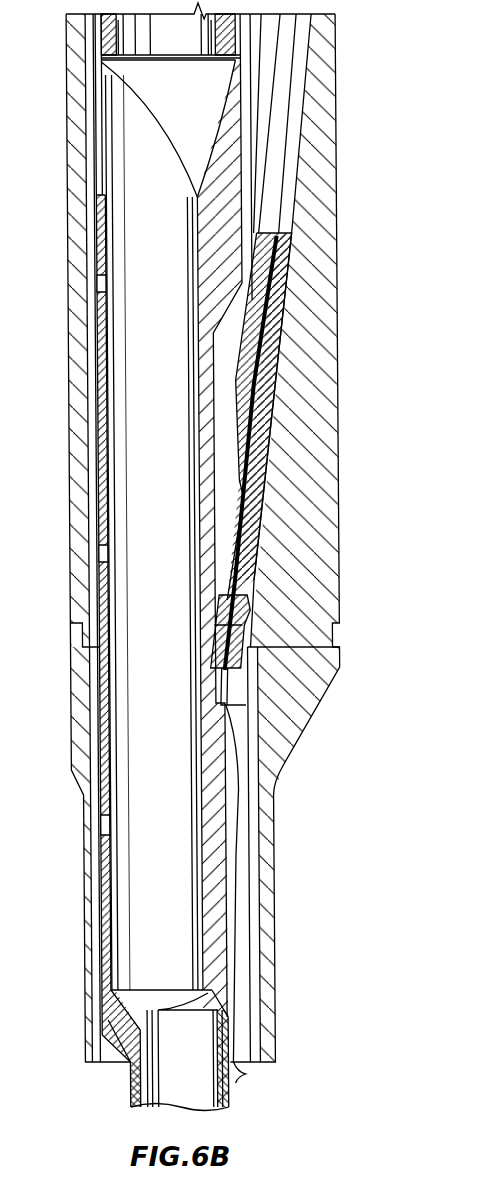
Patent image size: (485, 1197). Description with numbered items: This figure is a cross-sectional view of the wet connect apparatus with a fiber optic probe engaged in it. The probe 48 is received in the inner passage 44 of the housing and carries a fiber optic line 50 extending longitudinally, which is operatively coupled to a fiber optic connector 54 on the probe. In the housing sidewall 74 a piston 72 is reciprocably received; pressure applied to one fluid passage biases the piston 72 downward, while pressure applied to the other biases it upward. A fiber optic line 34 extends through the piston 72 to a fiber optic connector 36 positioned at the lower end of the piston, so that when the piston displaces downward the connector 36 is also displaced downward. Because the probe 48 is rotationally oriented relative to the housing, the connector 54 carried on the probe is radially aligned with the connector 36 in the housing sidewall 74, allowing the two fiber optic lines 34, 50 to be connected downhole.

The fiber optic line 34 is at (255, 422).
The fiber optic connector 36 is at (247, 575).
The inner passage 44 is at (88, 421).
The probe 48 is at (98, 860).
The fiber optic line 50 is at (233, 855).
The fiber optic connector 54 is at (243, 598).
The piston 72 is at (273, 390).
The housing sidewall 74 is at (337, 470).